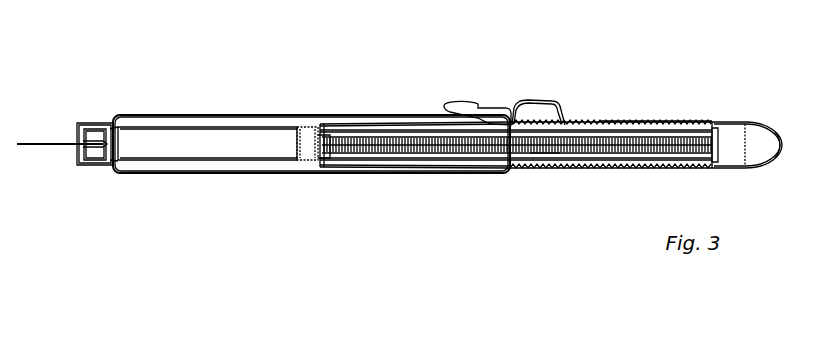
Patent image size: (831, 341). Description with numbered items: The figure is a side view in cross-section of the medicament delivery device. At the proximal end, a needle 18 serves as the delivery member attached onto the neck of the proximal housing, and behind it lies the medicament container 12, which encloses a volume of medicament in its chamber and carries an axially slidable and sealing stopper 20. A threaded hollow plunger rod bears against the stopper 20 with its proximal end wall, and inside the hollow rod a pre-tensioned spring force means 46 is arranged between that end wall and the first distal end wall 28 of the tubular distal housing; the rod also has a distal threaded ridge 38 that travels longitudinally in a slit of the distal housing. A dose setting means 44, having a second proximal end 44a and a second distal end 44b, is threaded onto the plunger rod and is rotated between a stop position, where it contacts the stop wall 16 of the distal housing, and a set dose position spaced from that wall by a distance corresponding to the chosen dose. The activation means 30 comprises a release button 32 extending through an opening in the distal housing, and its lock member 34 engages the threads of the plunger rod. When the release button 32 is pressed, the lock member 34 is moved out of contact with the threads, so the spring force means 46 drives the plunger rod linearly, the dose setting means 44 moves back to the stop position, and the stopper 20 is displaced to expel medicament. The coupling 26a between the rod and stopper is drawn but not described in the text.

The medicament container 12 is at (187, 154).
The stop wall 16 is at (505, 157).
The needle 18 is at (45, 145).
The stopper 20 is at (310, 135).
The rod coupling 26a is at (320, 153).
The first distal end wall 28 is at (722, 165).
The activation means 30 is at (489, 67).
The release button 32 is at (483, 108).
The lock member 34 is at (540, 102).
The distal threaded ridge 38 is at (675, 120).
The dose setting means 44 is at (740, 120).
The second proximal end 44a is at (542, 153).
The second distal end 44b is at (787, 145).
The spring force means 46 is at (580, 150).